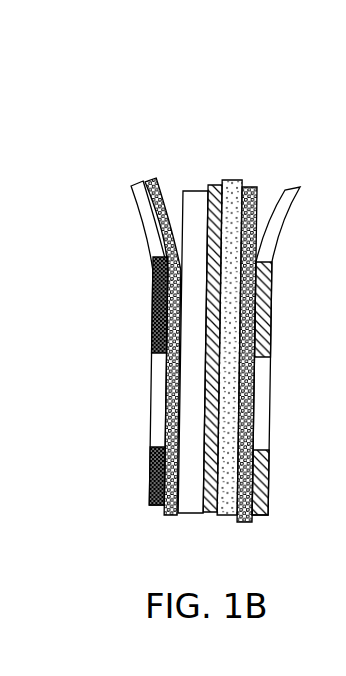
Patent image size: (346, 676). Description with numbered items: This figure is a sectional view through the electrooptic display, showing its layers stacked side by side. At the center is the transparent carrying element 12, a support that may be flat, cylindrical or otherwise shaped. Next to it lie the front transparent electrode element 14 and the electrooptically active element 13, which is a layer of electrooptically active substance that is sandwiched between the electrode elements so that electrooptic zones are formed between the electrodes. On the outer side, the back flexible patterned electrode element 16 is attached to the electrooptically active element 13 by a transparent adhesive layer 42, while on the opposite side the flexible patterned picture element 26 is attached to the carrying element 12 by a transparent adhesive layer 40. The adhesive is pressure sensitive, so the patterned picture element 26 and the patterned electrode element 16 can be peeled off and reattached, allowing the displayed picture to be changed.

The transparent carrying element 12 is at (200, 190).
The electrooptically active element 13 is at (238, 180).
The front transparent electrode element 14 is at (216, 185).
The back flexible patterned electrode element 16 is at (297, 187).
The flexible patterned picture element 26 is at (137, 180).
The transparent adhesive layer 40 is at (149, 178).
The transparent adhesive layer 42 is at (255, 185).